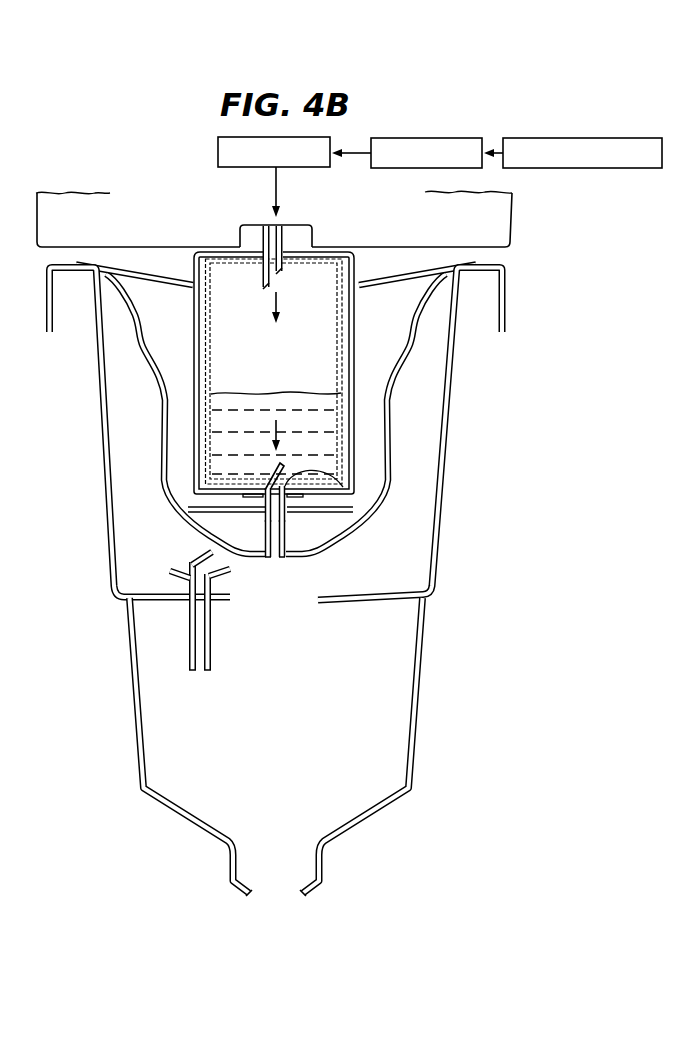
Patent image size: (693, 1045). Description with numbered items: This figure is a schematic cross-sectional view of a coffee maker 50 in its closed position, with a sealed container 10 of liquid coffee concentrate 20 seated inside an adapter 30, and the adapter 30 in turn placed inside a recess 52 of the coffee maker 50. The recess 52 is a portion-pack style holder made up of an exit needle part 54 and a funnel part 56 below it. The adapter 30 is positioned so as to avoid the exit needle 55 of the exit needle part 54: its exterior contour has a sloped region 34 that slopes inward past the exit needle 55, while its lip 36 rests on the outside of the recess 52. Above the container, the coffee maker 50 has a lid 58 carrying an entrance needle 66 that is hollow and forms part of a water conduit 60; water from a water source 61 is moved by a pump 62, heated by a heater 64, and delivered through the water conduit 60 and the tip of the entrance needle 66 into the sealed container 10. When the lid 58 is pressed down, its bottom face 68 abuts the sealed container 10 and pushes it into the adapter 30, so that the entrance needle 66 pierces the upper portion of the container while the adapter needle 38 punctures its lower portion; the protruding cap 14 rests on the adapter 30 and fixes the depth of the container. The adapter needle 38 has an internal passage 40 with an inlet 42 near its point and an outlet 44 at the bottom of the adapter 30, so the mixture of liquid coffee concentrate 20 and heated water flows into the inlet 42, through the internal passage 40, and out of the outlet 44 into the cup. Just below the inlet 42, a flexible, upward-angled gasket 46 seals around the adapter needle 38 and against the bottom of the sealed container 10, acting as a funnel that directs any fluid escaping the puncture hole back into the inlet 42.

The sealed container 10 is at (238, 332).
The protruding cap 14 is at (363, 262).
The liquid coffee concentrate 20 is at (318, 410).
The adapter 30 is at (260, 379).
The sloped region 34 is at (203, 535).
The lip 36 is at (90, 263).
The adapter needle 38 is at (197, 512).
The internal passage 40 is at (331, 516).
The inlet 42 is at (300, 496).
The outlet 44 is at (278, 560).
The gasket 46 is at (368, 513).
The coffee maker 50 is at (335, 538).
The recess 52 is at (422, 551).
The exit needle part 54 is at (452, 449).
The exit needle 55 is at (200, 559).
The funnel part 56 is at (426, 700).
The lid 58 is at (286, 227).
The water conduit 60 is at (270, 240).
The water source 61 is at (584, 138).
The pump 62 is at (428, 138).
The heater 64 is at (218, 152).
The entrance needle 66 is at (265, 277).
The bottom face 68 is at (503, 250).